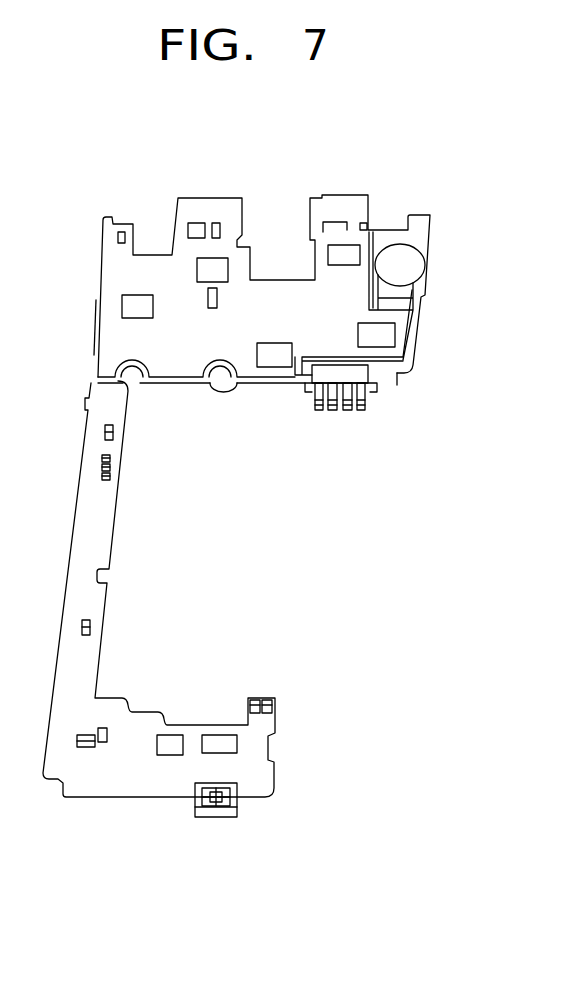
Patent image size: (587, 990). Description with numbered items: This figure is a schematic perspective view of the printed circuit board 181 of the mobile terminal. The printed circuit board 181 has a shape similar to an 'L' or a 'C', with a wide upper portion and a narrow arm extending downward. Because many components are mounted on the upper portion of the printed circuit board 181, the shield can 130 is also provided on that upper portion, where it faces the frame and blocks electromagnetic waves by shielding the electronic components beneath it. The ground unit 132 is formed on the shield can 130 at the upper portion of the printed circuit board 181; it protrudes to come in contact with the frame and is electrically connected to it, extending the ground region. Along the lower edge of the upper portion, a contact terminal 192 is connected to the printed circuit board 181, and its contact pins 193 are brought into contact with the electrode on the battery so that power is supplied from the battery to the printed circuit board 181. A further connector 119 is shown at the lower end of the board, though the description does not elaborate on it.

The shield can 130 is at (270, 298).
The ground unit 132 is at (133, 307).
The printed circuit board 181 is at (105, 506).
The contact terminal 192 is at (358, 373).
The contact pins 193 is at (357, 398).
The connector 119 is at (218, 800).